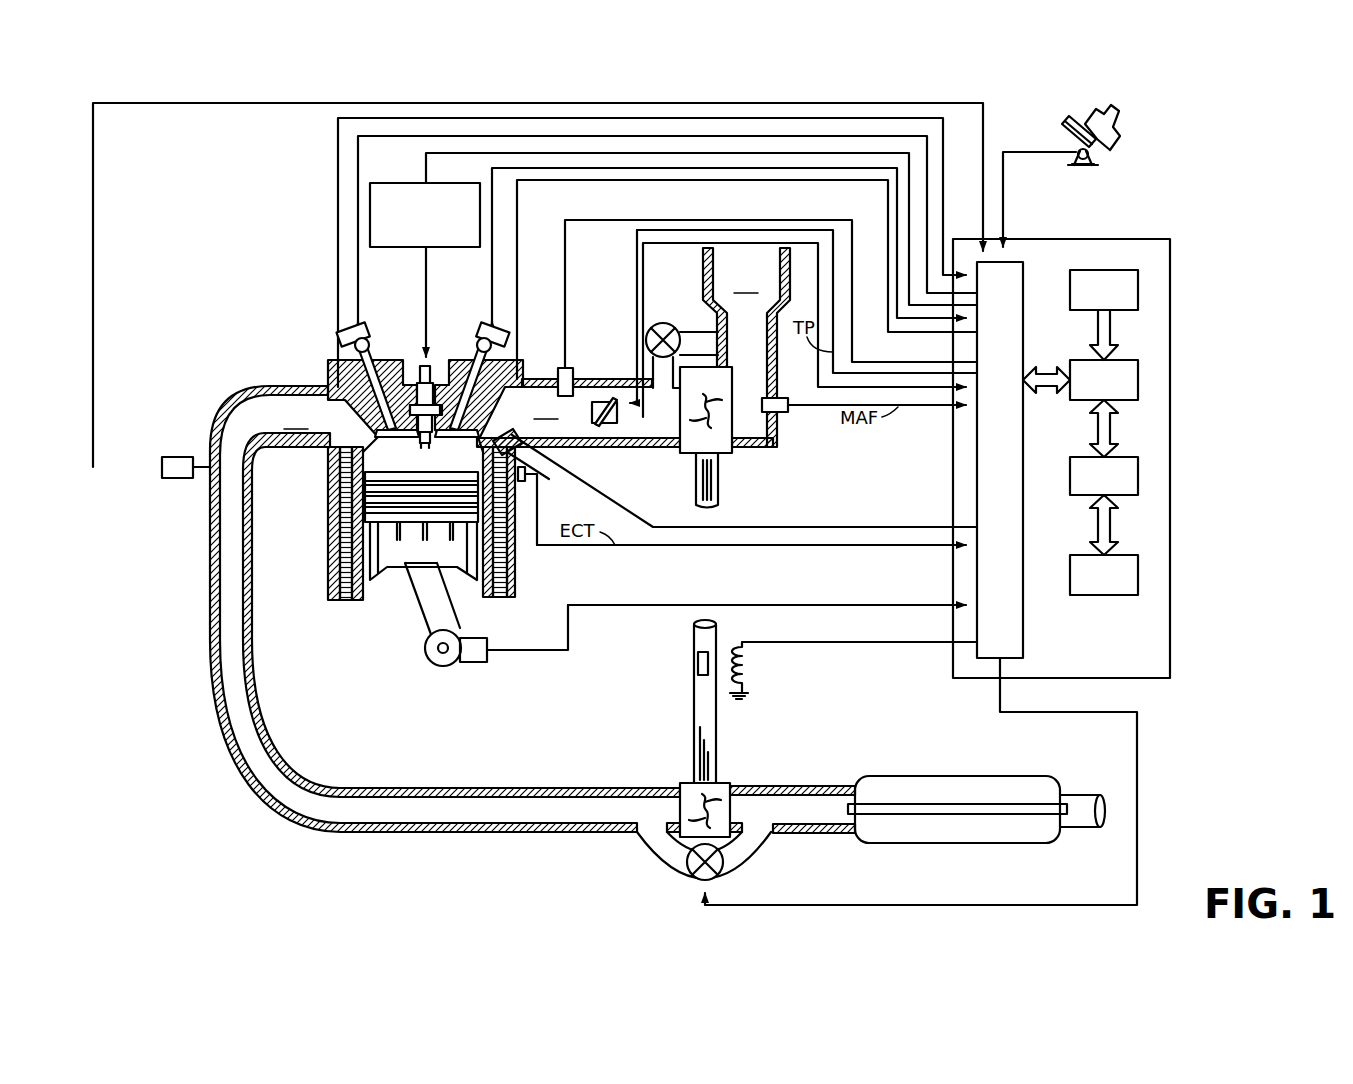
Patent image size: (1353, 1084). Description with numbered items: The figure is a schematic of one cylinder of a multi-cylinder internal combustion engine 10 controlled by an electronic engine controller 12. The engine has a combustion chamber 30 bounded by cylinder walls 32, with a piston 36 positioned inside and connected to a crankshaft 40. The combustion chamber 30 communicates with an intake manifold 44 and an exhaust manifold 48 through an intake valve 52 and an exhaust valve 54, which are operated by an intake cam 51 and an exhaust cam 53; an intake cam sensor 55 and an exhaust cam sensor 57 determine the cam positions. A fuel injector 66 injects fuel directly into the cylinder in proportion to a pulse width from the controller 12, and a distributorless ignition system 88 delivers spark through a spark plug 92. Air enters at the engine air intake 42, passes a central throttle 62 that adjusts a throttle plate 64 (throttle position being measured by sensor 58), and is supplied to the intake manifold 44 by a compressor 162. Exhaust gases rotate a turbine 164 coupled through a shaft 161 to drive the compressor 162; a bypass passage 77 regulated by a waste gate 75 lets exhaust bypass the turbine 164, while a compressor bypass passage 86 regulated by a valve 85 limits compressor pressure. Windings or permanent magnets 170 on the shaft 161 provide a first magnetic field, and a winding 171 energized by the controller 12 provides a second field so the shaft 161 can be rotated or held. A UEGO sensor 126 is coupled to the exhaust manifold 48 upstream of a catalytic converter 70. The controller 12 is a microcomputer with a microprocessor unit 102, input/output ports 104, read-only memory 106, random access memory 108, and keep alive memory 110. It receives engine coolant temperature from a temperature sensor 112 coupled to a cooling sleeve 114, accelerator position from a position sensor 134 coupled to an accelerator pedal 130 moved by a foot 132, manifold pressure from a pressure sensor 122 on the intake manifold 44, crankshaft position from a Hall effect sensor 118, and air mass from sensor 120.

The internal combustion engine 10 is at (262, 313).
The electronic engine controller 12 is at (1170, 240).
The combustion chamber 30 is at (422, 457).
The cylinder walls 32 is at (365, 598).
The piston 36 is at (407, 552).
The crankshaft 40 is at (432, 663).
The engine air intake 42 is at (746, 347).
The intake manifold 44 is at (625, 402).
The exhaust manifold 48 is at (445, 609).
The intake cam 51 is at (472, 330).
The intake valve 52 is at (436, 380).
The exhaust cam 53 is at (370, 330).
The exhaust valve 54 is at (358, 388).
The intake cam sensor 55 is at (492, 350).
The exhaust cam sensor 57 is at (350, 340).
The throttle position sensor 58 is at (610, 430).
The central throttle 62 is at (602, 398).
The throttle plate 64 is at (621, 398).
The fuel injector 66 is at (528, 462).
The catalytic converter 70 is at (862, 843).
The waste gate 75 is at (721, 873).
The bypass passage 77 is at (650, 848).
The valve 85 is at (663, 322).
The compressor bypass passage 86 is at (704, 332).
The distributorless ignition system 88 is at (386, 183).
The spark plug 92 is at (418, 376).
The microprocessor unit 102 is at (1138, 388).
The input/output ports 104 is at (1024, 272).
The read-only memory 106 is at (1138, 296).
The random access memory 108 is at (1138, 487).
The keep alive memory 110 is at (1138, 583).
The temperature sensor 112 is at (522, 482).
The cooling sleeve 114 is at (512, 574).
The Hall effect sensor 118 is at (470, 664).
The air mass sensor 120 is at (783, 398).
The pressure sensor 122 is at (566, 364).
The Universal Exhaust Gas Oxygen sensor 126 is at (162, 466).
The accelerator pedal 130 is at (1066, 130).
The foot 132 is at (1119, 122).
The position sensor 134 is at (1094, 154).
The shaft 161 is at (718, 500).
The compressor 162 is at (731, 456).
The turbine 164 is at (680, 786).
The windings or permanent magnets 170 is at (699, 648).
The winding 171 is at (748, 690).